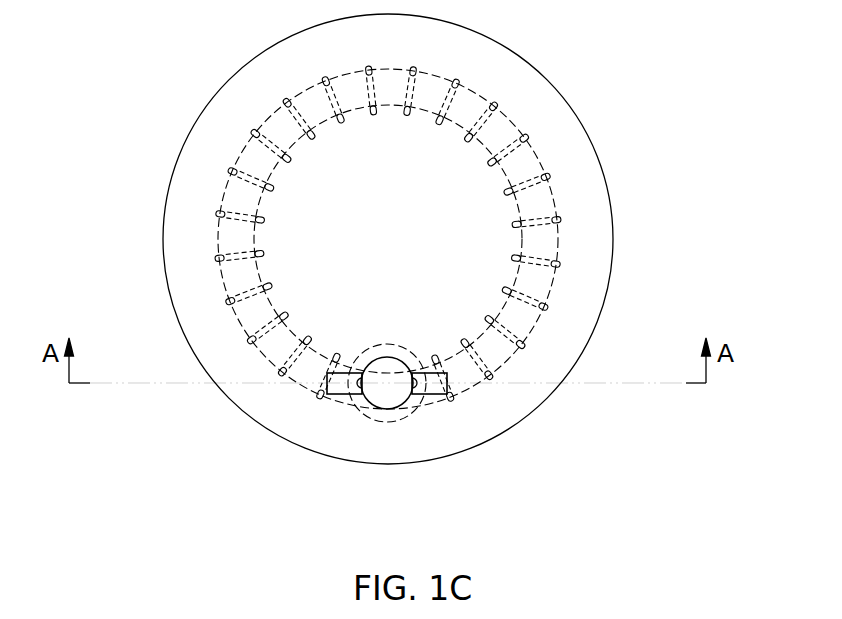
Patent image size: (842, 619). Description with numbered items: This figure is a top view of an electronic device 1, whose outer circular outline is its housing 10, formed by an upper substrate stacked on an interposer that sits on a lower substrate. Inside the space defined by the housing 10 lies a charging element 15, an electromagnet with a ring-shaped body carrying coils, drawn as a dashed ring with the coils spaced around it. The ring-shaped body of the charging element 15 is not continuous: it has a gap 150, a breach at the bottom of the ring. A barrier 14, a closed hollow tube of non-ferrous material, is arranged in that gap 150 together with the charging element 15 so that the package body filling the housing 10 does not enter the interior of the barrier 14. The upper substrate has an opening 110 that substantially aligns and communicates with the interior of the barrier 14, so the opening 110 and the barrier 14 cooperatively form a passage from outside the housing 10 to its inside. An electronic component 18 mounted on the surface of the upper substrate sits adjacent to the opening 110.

The electronic device 1 is at (452, 273).
The housing 10 is at (612, 237).
The barrier 14 is at (368, 414).
The charging element 15 is at (537, 205).
The electronic component 18 is at (343, 394).
The opening 110 is at (395, 398).
The gap 150 is at (430, 394).